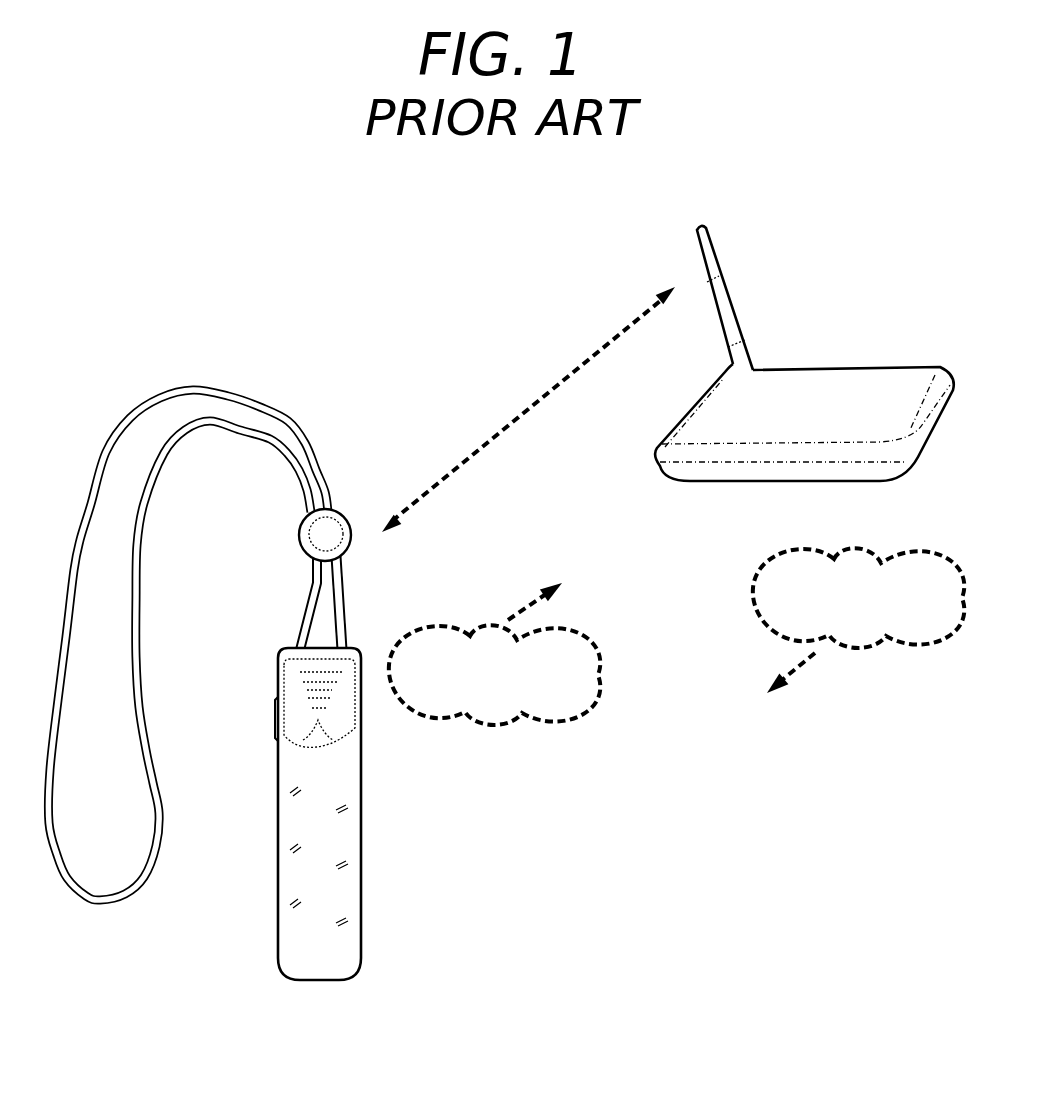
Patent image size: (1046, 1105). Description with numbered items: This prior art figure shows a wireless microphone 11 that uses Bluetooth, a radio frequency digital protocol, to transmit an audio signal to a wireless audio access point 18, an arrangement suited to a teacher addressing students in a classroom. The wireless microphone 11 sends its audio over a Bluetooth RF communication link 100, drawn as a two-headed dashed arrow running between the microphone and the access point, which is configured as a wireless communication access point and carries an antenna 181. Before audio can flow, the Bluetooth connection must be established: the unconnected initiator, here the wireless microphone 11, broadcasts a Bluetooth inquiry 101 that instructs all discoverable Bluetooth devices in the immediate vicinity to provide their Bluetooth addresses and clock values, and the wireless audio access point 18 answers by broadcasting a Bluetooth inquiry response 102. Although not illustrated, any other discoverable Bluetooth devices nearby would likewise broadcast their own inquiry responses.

The RF wireless microphone 11 is at (363, 863).
The wireless audio access point 18 is at (894, 366).
The antenna 181 is at (697, 231).
The Bluetooth RF communication link 100 is at (522, 414).
The Bluetooth inquiry 101 is at (566, 717).
The Bluetooth inquiry response 102 is at (783, 563).